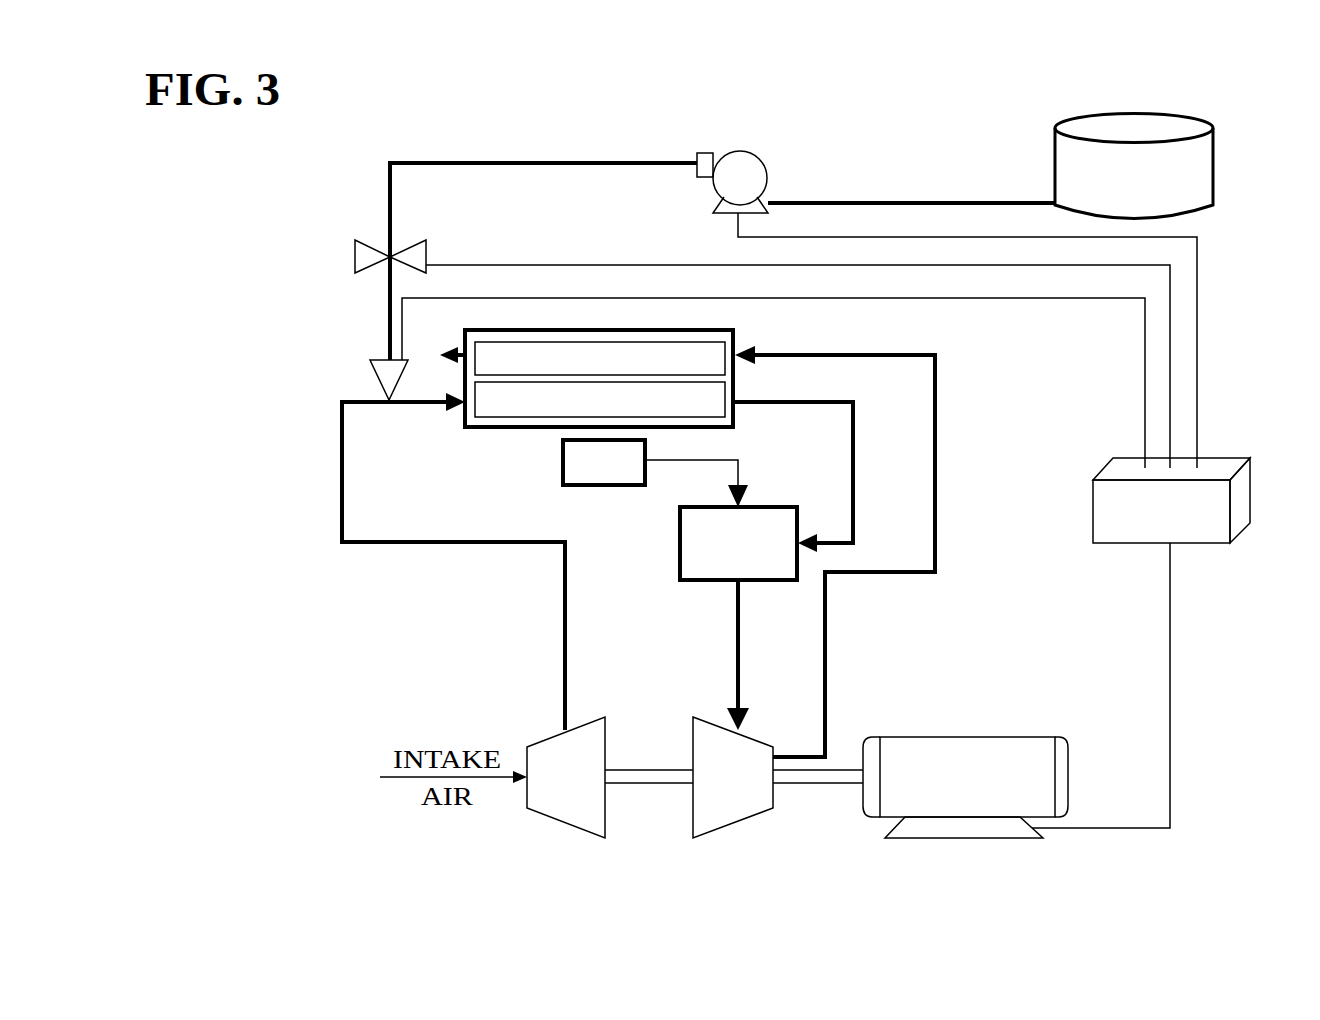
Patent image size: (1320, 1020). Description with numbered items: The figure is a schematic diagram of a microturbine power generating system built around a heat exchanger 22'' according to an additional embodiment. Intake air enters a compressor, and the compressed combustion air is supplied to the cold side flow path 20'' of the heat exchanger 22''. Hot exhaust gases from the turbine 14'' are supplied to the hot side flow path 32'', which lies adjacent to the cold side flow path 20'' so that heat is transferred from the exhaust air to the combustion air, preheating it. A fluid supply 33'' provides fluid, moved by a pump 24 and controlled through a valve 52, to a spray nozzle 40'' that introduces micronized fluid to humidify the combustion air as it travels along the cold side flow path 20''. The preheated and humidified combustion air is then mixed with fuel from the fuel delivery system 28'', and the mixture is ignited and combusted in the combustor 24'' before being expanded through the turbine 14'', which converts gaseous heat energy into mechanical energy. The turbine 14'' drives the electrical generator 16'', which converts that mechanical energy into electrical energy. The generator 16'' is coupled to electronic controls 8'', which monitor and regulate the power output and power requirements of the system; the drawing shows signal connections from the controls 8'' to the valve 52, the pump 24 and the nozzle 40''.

The valve 52 is at (353, 242).
The spray nozzle 40'' is at (341, 349).
The combustor 24 is at (755, 143).
The fluid supply 33'' is at (1134, 133).
The hot side flow path 32'' is at (650, 399).
The cold side flow path 20'' is at (591, 437).
The heat exchanger 22'' is at (428, 449).
The fuel delivery system 28'' is at (566, 482).
The combustor 24'' is at (715, 586).
The electronic controls 8'' is at (877, 660).
The turbine 14'' is at (777, 790).
The electrical generator 16'' is at (1003, 757).